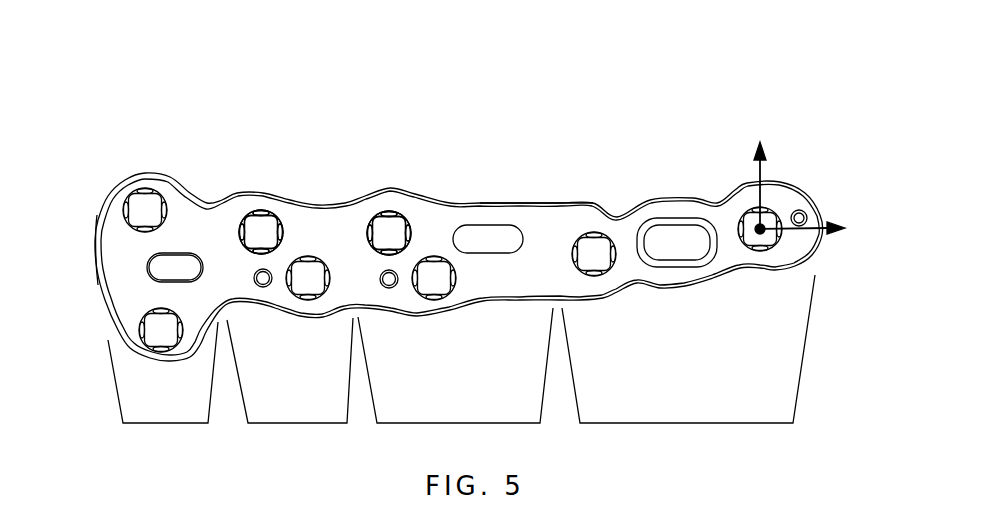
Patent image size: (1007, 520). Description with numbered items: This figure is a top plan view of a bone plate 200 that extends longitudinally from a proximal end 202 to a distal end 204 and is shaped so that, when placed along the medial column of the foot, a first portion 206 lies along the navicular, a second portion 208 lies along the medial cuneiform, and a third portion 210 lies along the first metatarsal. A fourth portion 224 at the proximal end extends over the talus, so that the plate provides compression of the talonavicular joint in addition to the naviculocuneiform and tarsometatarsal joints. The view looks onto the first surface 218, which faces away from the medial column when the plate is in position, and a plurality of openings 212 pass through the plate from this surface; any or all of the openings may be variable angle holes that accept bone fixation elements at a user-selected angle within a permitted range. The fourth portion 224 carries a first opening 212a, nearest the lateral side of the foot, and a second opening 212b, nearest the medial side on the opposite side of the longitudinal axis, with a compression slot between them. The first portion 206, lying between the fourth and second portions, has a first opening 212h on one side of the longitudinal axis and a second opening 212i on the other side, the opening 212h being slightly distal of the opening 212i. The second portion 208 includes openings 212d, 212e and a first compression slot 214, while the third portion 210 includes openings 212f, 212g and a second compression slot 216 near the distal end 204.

The bone plate 200 is at (292, 118).
The proximal end 202 is at (93, 228).
The distal end 204 is at (808, 210).
The first portion 206 is at (290, 383).
The second portion 208 is at (455, 378).
The third portion 210 is at (688, 362).
The openings 212 is at (257, 213).
The first opening 212a is at (153, 330).
The second opening 212b is at (143, 193).
The opening 212d is at (438, 297).
The opening 212e is at (392, 208).
The opening 212f is at (578, 232).
The opening 212g is at (738, 205).
The first opening 212h is at (305, 292).
The second opening 212i is at (247, 217).
The first compression slot 214 is at (485, 240).
The second compression slot 216 is at (670, 223).
The first surface 218 is at (540, 217).
The fourth portion 224 is at (163, 385).